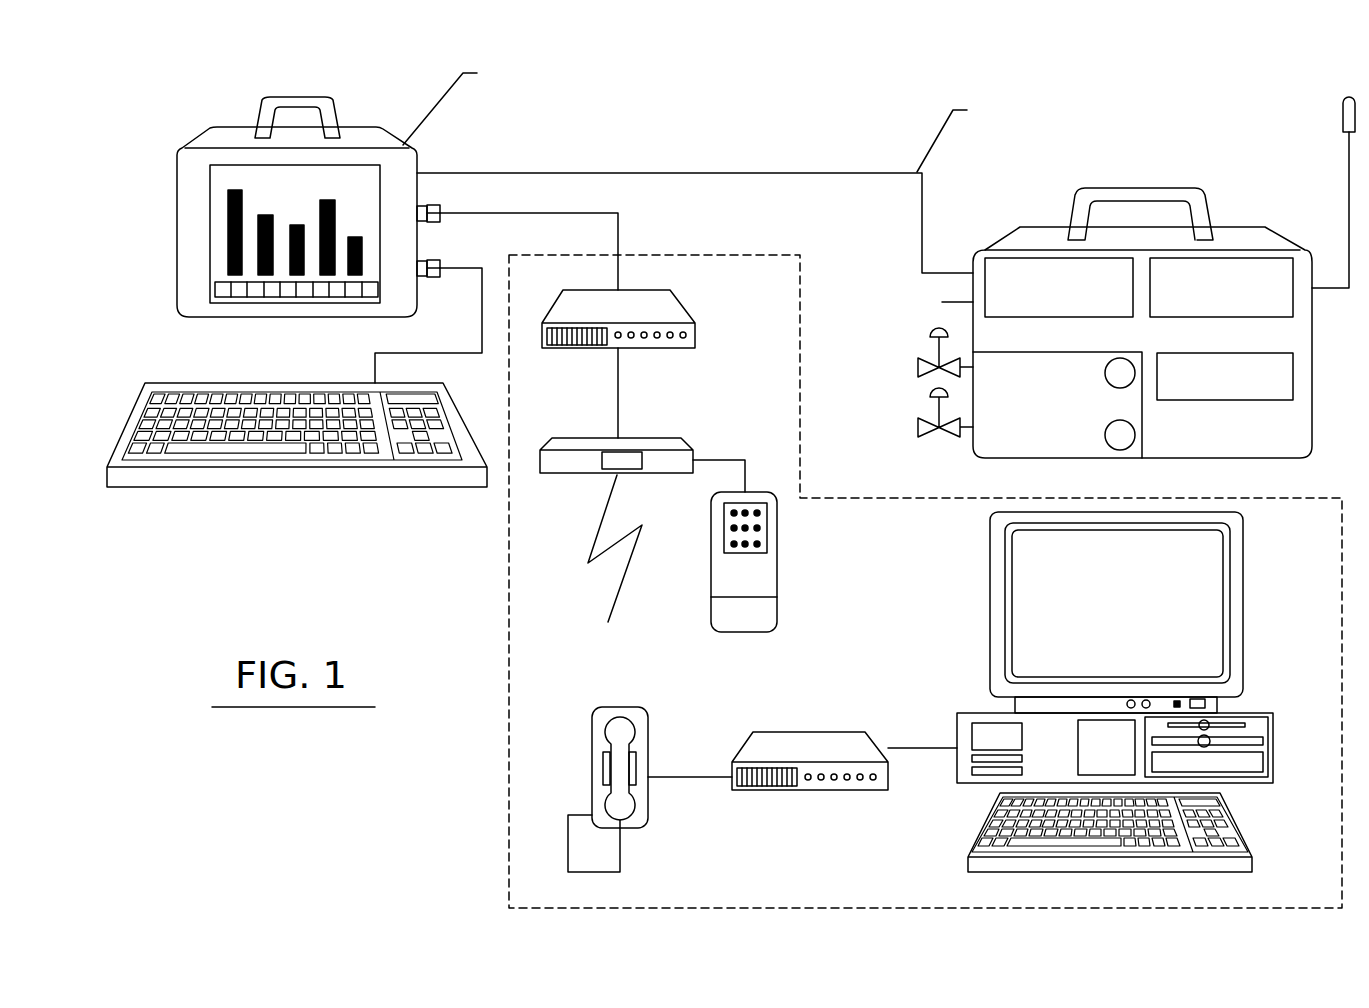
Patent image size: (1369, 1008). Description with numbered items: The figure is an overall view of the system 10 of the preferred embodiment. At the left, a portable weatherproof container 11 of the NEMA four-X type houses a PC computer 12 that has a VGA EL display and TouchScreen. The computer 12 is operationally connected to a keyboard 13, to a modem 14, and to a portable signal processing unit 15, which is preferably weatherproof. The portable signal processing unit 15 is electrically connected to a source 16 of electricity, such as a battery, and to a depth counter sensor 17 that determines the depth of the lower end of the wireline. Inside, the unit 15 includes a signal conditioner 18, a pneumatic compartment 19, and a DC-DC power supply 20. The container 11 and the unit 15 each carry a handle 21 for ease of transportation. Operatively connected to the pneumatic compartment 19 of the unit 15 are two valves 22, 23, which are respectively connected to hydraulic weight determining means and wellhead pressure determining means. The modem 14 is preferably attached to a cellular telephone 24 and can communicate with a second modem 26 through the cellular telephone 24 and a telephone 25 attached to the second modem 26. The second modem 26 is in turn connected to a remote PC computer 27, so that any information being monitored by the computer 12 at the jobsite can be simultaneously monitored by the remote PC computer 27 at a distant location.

The system 10 is at (880, 102).
The portable NEMA 4X weatherproof container 11 is at (475, 222).
The 386-SX PC computer 12 is at (232, 127).
The keyboard 13 is at (257, 487).
The modem 14 is at (690, 312).
The portable signal processing unit 15 is at (1008, 232).
The source of electricity 16 is at (883, 283).
The depth counter sensor 17 is at (1343, 93).
The signal conditioner 18 is at (1293, 367).
The pneumatic compartment 19 is at (1142, 420).
The DC-DC power supply 20 is at (1088, 312).
The handle 21 is at (315, 97).
The valve 22 is at (930, 340).
The valve 23 is at (950, 440).
The cellular telephone 24 is at (665, 473).
The telephone 25 is at (592, 755).
The second modem 26 is at (772, 790).
The remote PC computer 27 is at (987, 620).